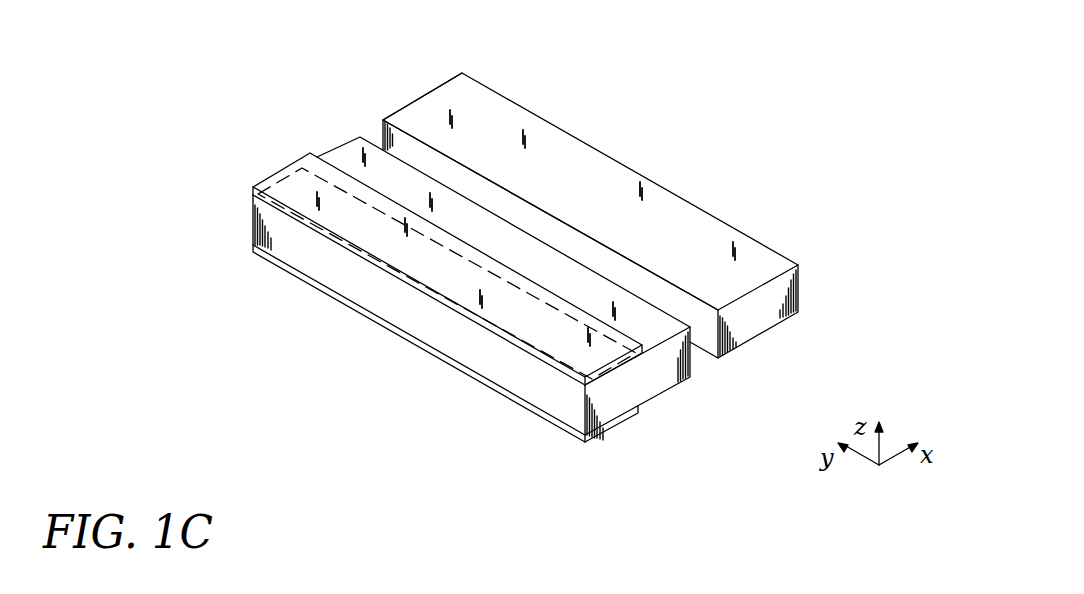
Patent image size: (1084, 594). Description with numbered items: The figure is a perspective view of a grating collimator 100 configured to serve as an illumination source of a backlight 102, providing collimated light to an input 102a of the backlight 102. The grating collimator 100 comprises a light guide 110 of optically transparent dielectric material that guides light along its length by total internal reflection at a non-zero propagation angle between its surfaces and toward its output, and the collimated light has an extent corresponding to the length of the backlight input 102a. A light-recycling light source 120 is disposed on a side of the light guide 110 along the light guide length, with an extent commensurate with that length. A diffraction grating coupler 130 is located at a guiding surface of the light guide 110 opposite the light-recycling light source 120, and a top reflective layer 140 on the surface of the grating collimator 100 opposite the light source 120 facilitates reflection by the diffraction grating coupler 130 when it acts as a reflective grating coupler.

The grating collimator 100 is at (238, 65).
The backlight 102 is at (628, 170).
The input of the backlight 102a is at (383, 120).
The light guide 110 is at (655, 375).
The light-recycling light source 120 is at (614, 421).
The diffraction grating coupler 130 is at (301, 165).
The top reflective layer 140 is at (266, 186).